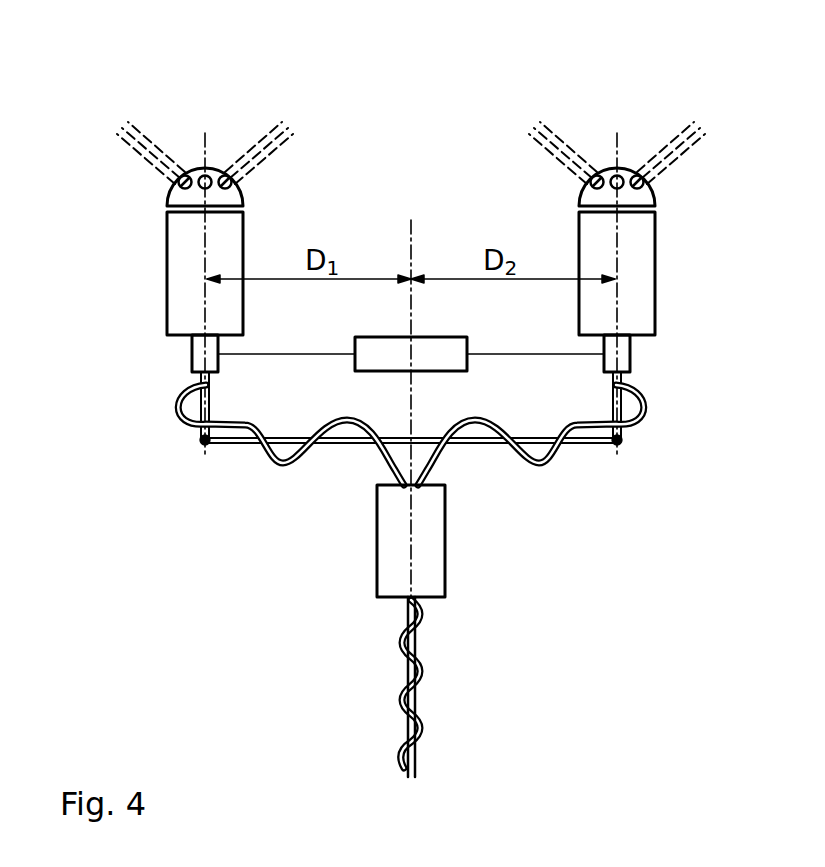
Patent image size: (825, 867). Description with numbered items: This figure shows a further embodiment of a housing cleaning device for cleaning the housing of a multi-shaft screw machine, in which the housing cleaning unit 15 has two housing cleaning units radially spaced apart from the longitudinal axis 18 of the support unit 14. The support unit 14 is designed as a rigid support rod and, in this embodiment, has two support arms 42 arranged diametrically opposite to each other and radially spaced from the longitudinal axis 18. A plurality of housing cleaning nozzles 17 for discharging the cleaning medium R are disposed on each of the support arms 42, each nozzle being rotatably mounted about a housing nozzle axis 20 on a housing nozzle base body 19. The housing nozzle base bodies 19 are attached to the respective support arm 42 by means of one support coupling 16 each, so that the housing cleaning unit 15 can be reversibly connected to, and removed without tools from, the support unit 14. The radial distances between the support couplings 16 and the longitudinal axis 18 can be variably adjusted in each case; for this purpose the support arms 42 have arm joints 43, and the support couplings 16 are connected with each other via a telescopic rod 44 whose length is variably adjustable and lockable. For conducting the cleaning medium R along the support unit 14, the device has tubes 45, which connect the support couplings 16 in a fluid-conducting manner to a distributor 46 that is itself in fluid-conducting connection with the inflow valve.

The support unit 14 is at (420, 742).
The housing cleaning unit 15 is at (688, 302).
The support coupling 16 is at (196, 346).
The housing cleaning nozzles 17 is at (216, 172).
The longitudinal axis 18 is at (410, 237).
The housing nozzle base body 19 is at (183, 252).
The housing nozzle axis 20 is at (205, 145).
The support arms 42 is at (200, 437).
The arm joints 43 is at (205, 445).
The telescopic rod 44 is at (265, 354).
The tubes 45 is at (183, 410).
The distributor 46 is at (430, 550).
The cleaning medium R is at (138, 130).